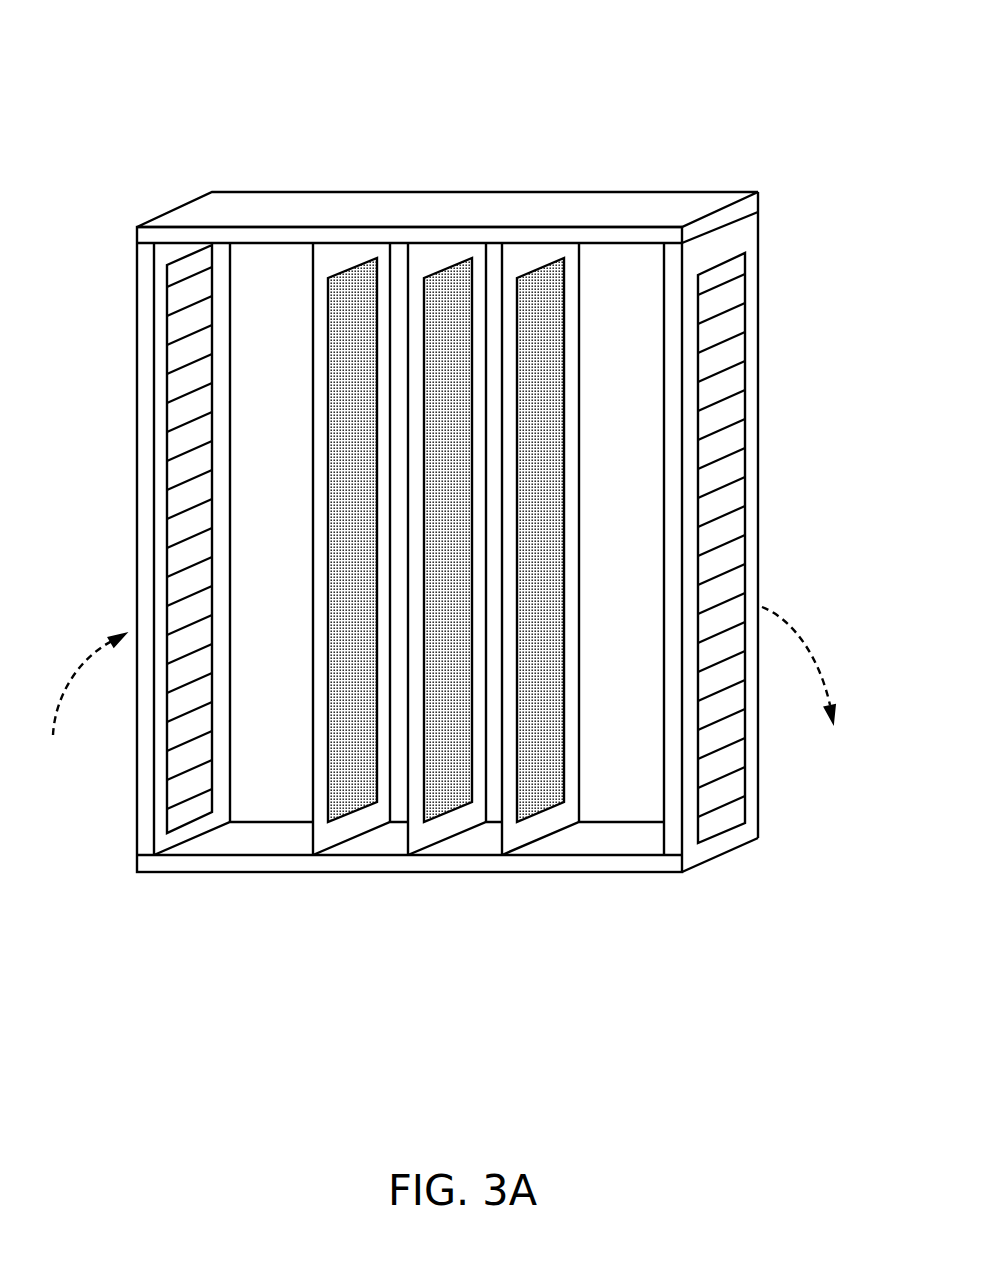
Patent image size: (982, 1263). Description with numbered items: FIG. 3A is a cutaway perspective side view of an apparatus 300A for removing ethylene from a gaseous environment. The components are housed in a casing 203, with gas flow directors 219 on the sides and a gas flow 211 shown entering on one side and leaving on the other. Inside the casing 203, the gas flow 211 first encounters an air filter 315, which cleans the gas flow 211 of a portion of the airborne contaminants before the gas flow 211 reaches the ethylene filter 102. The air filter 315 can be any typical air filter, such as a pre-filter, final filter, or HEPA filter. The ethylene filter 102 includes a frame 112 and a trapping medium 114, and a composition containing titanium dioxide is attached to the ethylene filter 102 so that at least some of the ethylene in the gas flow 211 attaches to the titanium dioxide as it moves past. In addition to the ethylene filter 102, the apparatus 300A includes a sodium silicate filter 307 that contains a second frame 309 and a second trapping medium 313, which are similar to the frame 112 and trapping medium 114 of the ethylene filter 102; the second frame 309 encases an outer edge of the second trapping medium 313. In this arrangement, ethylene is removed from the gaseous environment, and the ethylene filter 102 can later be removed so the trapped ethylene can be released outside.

The apparatus 300A is at (155, 73).
The casing 203 is at (237, 192).
The sodium silicate filter 307 is at (488, 260).
The ethylene filter 102 is at (580, 280).
The air filter 315 is at (315, 768).
The second frame 309 is at (417, 833).
The second trapping medium 313 is at (442, 788).
The frame 112 is at (513, 833).
The trapping medium 114 is at (533, 800).
The gas flow director 219 is at (180, 557).
The gas flow 211 is at (77, 672).